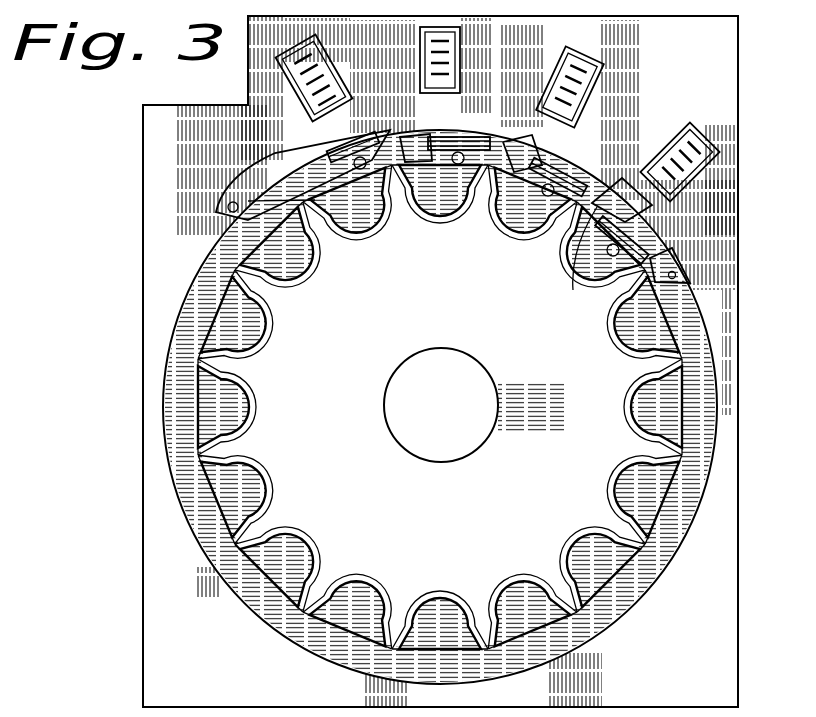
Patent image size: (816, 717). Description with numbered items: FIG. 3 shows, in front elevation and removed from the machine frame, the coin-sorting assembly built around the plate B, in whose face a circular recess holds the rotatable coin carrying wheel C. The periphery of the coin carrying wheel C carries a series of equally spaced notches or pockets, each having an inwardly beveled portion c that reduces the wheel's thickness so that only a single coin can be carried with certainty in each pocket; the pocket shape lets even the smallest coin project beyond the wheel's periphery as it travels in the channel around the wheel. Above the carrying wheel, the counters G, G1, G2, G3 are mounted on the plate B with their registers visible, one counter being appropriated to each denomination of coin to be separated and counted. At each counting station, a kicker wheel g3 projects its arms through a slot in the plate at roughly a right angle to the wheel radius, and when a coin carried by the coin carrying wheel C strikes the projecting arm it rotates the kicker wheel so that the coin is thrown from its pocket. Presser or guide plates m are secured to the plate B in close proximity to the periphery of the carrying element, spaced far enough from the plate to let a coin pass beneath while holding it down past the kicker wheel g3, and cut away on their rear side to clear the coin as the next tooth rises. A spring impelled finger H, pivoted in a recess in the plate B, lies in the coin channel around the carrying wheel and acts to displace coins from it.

The plate B is at (683, 327).
The spring impelled finger H is at (315, 243).
The coin carrying wheel C is at (303, 448).
The inwardly beveled portion c is at (237, 540).
The counter G is at (315, 80).
The counter G1 is at (460, 50).
The counter G2 is at (580, 60).
The counter G3 is at (690, 158).
The kicker wheel g3 is at (272, 195).
The presser or guide plate m is at (425, 135).